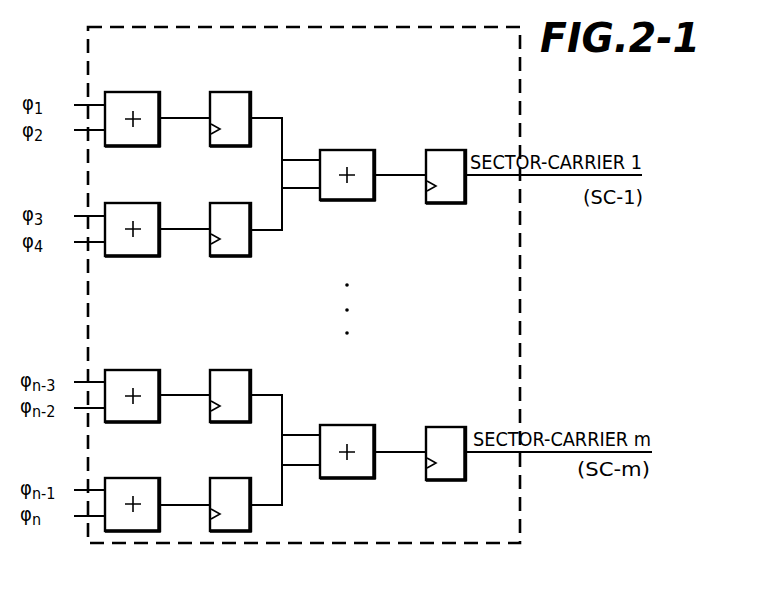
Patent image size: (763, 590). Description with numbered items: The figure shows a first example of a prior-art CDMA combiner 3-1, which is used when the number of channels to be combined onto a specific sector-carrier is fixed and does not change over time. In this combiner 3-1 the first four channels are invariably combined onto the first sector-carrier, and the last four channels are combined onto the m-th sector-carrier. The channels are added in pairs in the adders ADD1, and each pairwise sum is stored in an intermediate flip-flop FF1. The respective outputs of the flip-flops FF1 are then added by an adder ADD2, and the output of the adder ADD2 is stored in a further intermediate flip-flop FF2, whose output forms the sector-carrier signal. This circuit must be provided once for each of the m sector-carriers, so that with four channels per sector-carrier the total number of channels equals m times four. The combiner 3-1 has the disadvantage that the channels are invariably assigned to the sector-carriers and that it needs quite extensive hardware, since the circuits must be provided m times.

The combiner 3-1 is at (520, 105).
The adder ADD1 is at (137, 92).
The intermediate flip-flop FF1 is at (230, 92).
The adder ADD2 is at (347, 150).
The further intermediate flip-flop FF2 is at (446, 150).